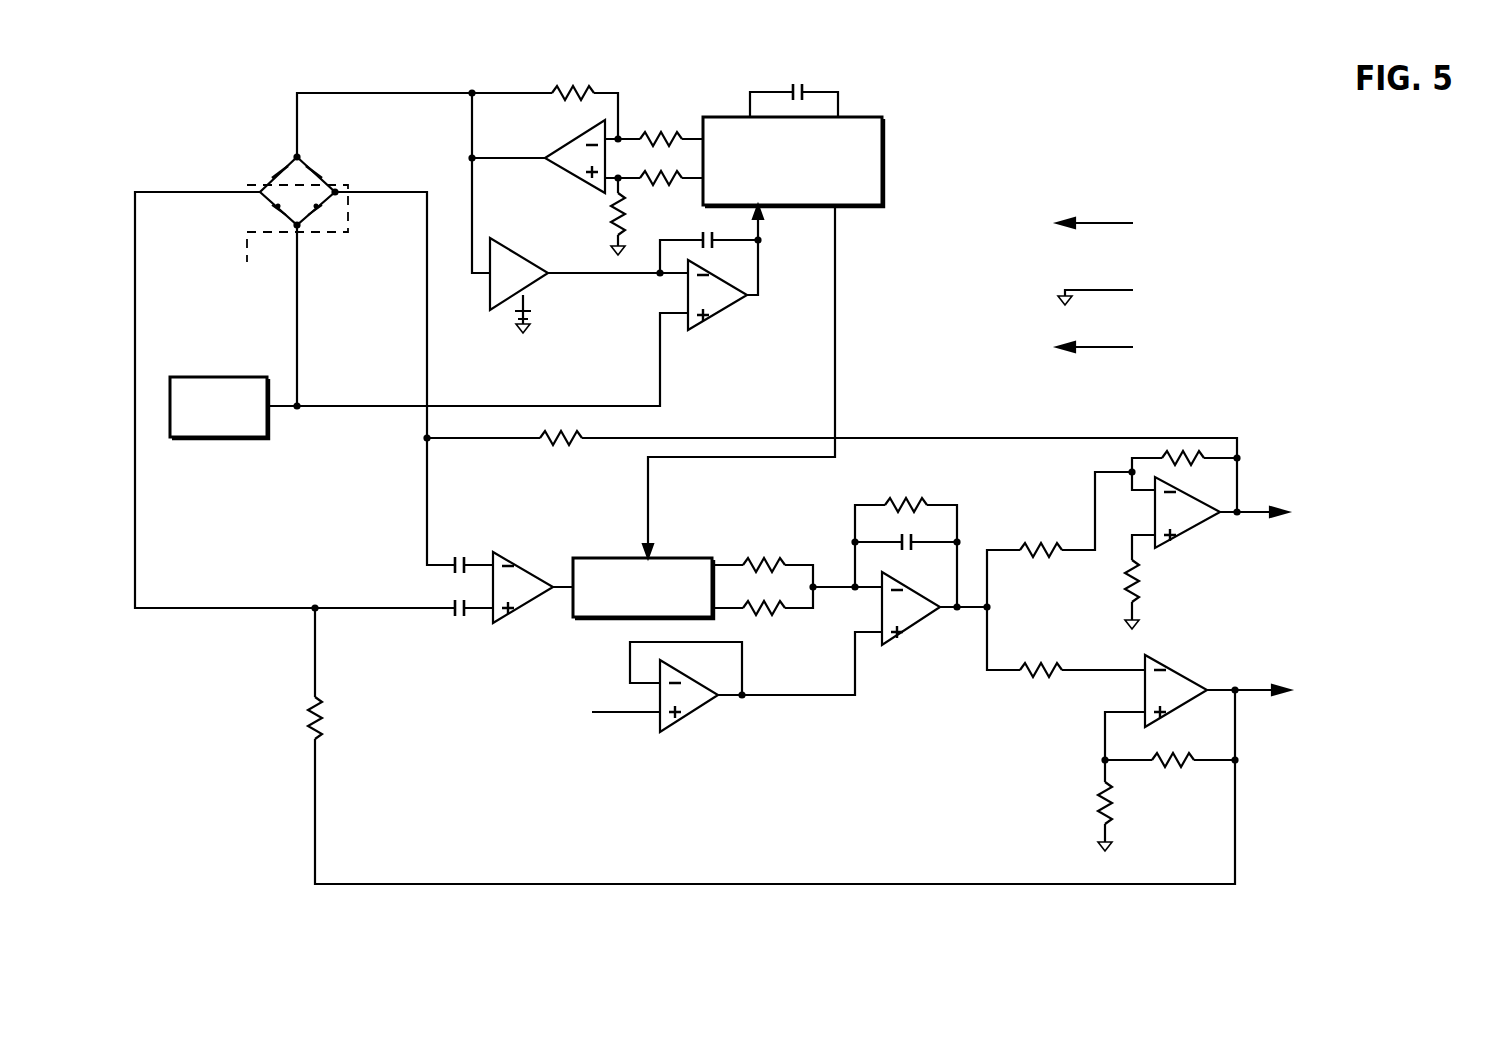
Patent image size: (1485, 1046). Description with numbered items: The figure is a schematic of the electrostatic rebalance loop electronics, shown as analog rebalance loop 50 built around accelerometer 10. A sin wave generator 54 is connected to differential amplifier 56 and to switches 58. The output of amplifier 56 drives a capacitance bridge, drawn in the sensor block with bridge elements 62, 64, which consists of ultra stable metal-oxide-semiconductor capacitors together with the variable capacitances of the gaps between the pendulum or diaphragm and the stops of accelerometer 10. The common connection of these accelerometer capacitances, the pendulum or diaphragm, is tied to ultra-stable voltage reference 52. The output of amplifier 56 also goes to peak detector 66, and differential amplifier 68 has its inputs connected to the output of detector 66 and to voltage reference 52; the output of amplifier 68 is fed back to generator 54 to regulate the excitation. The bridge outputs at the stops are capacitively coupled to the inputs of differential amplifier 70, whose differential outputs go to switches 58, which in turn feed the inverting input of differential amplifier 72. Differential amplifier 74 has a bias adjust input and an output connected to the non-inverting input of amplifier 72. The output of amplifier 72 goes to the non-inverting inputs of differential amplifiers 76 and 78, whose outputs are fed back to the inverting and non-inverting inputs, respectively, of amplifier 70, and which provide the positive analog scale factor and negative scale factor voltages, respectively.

The accelerometer 10 is at (323, 208).
The analog rebalance loop 50 is at (1147, 114).
The voltage reference 52 is at (210, 377).
The sin wave generator 54 is at (882, 175).
The differential amplifier 56 is at (578, 180).
The switches 58 is at (683, 558).
The strain gauge 62 is at (274, 169).
The strain gauge 64 is at (322, 168).
The peak detector 66 is at (527, 286).
The differential amplifier 68 is at (722, 312).
The differential amplifier 70 is at (503, 552).
The differential amplifier 72 is at (918, 626).
The differential amplifier 74 is at (700, 712).
The differential amplifier 76 is at (1195, 527).
The differential amplifier 78 is at (1168, 651).